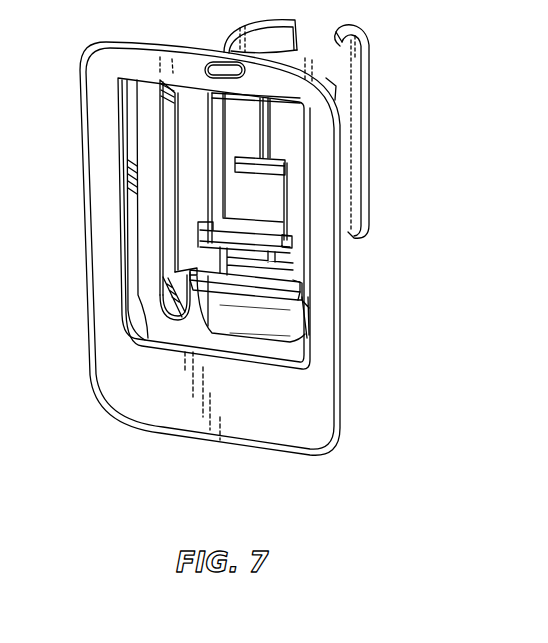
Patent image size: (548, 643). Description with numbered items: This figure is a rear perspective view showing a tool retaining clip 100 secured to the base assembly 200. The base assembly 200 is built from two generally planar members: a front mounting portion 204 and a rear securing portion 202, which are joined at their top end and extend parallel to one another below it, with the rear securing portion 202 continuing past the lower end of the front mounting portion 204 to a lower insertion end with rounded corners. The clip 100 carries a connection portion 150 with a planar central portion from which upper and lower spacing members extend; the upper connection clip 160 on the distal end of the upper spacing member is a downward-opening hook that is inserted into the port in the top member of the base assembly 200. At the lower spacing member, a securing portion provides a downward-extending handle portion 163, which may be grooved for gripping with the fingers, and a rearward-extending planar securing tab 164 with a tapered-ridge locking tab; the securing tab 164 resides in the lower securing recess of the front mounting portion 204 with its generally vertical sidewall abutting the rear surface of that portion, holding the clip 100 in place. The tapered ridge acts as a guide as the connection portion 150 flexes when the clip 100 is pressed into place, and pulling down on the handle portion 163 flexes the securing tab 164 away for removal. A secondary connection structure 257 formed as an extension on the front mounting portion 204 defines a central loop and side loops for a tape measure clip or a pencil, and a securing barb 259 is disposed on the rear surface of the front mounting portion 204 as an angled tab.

The tool retaining clip 100 is at (358, 115).
The connection portion 150 is at (240, 227).
The upper connection clip 160 is at (220, 98).
The handle portion 163 is at (237, 323).
The securing tab 164 is at (210, 252).
The base assembly 200 is at (261, 273).
The rear securing portion 202 is at (188, 413).
The front mounting portion 204 is at (290, 207).
The secondary connection structure 257 is at (245, 188).
The securing barb 259 is at (165, 277).